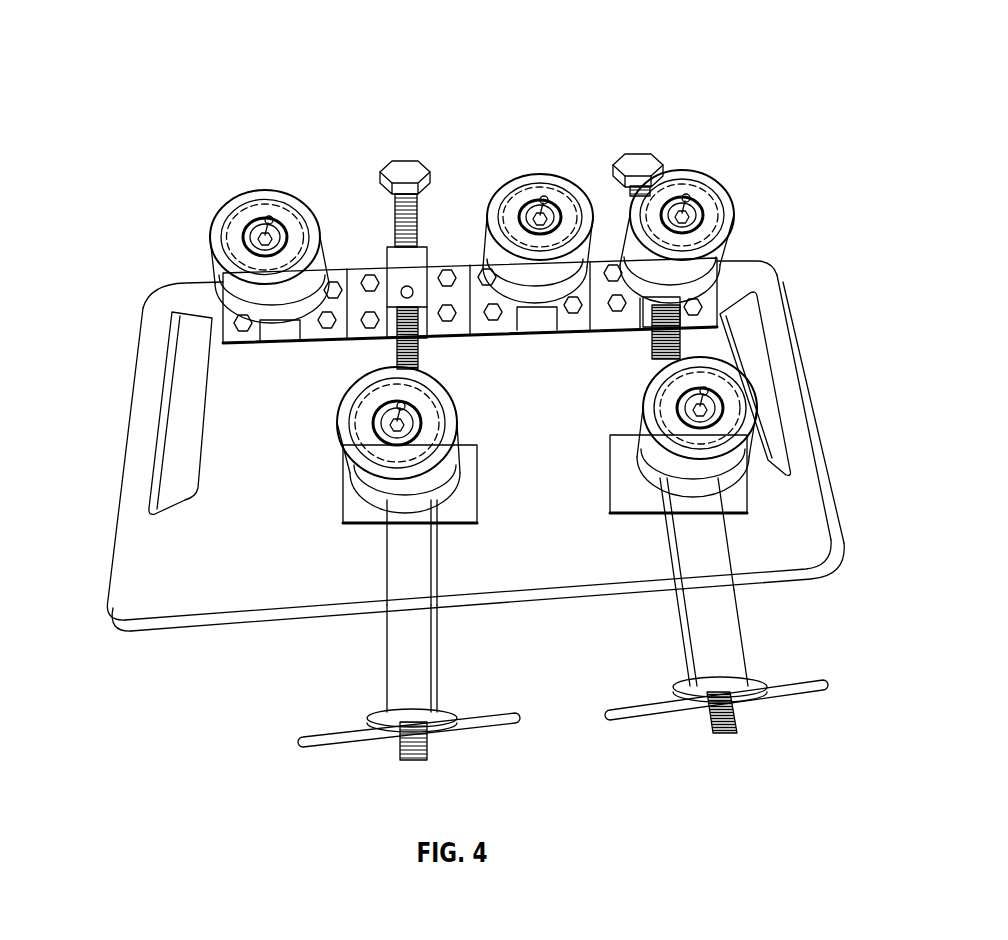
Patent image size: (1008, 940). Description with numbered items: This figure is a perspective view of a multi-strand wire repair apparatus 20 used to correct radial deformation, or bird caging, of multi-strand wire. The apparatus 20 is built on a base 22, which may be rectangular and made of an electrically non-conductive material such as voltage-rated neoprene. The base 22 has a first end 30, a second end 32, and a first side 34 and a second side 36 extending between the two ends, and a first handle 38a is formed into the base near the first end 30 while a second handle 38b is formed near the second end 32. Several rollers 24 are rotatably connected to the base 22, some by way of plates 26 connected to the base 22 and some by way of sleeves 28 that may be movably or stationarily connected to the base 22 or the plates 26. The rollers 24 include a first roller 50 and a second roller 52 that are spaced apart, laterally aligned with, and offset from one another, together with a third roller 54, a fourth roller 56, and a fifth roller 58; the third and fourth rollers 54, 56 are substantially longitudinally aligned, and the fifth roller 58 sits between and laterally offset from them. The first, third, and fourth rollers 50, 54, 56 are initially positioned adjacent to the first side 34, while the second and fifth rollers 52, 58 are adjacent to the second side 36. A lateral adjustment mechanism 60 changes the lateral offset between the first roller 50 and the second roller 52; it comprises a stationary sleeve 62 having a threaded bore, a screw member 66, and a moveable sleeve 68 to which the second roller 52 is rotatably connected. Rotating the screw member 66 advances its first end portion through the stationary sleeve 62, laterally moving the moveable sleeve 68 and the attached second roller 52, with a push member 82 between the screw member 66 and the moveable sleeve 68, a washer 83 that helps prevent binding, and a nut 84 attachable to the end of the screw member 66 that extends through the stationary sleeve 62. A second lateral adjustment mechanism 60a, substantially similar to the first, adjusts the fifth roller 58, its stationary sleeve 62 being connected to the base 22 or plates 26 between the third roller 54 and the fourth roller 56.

The repair apparatus 20 is at (701, 48).
The base 22 is at (193, 597).
The rollers 24 is at (223, 207).
The plates 26 is at (434, 280).
The sleeves 28 is at (737, 285).
The first end 30 is at (133, 380).
The second end 32 is at (807, 378).
The first side 34 is at (200, 278).
The second side 36 is at (206, 633).
The first handle 38a is at (157, 460).
The second handle 38b is at (790, 441).
The first roller 50 is at (677, 172).
The second roller 52 is at (730, 473).
The third roller 54 is at (271, 190).
The fourth roller 56 is at (538, 172).
The fifth roller 58 is at (336, 424).
The lateral adjustment mechanism 60 is at (728, 731).
The second lateral adjustment mechanism 60a is at (413, 760).
The stationary sleeve 62 is at (387, 250).
The screw member 66 is at (679, 350).
The moveable sleeve 68 is at (383, 537).
The push member 82 is at (437, 663).
The washer 83 is at (448, 711).
The nut 84 is at (403, 171).